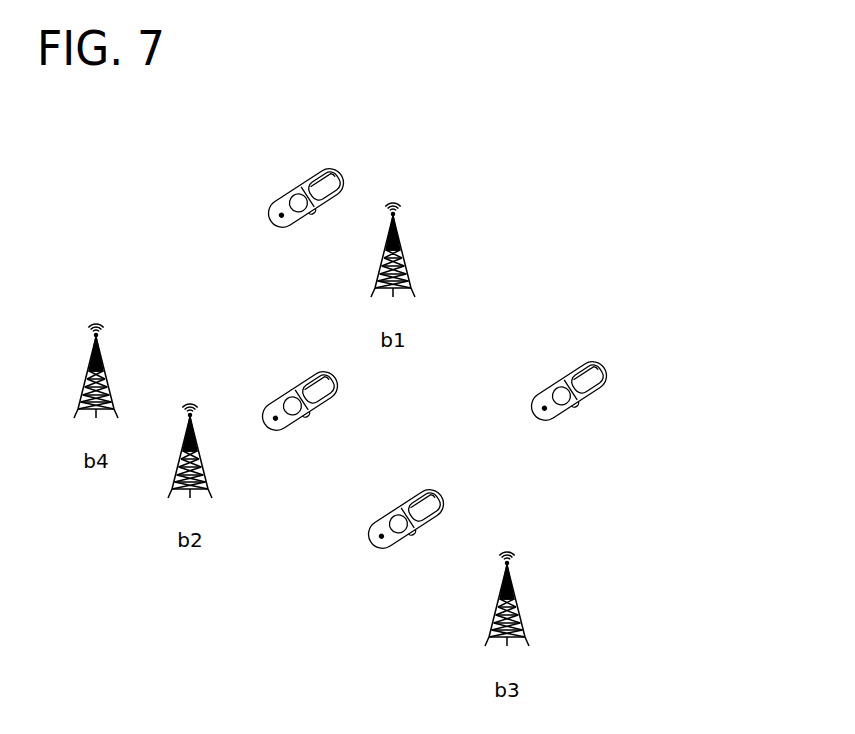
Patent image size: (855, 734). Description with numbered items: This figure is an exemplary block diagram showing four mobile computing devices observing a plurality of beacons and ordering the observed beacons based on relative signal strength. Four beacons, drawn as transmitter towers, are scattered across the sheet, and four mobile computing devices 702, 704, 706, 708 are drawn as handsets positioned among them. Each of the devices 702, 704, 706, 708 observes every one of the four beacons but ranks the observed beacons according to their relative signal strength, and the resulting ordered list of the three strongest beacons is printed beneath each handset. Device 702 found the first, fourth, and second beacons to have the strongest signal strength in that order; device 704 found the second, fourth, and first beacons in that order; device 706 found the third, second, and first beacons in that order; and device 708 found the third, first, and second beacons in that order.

The mobile computing device 702 is at (319, 170).
The mobile computing device 704 is at (322, 373).
The mobile computing device 706 is at (428, 490).
The mobile computing device 708 is at (592, 362).